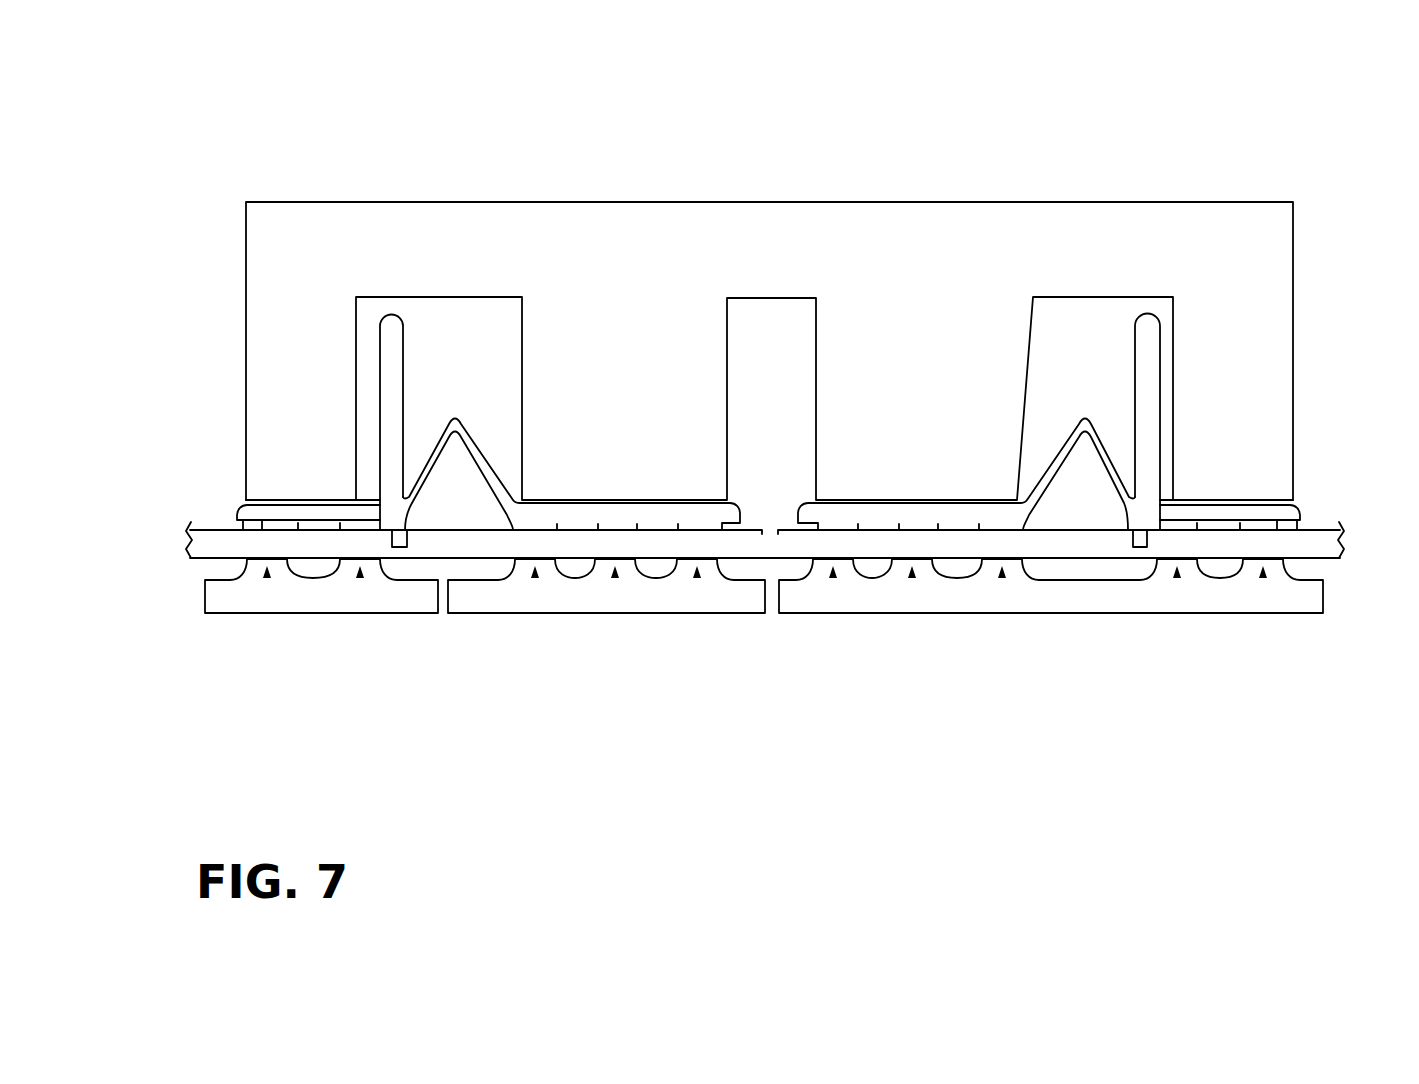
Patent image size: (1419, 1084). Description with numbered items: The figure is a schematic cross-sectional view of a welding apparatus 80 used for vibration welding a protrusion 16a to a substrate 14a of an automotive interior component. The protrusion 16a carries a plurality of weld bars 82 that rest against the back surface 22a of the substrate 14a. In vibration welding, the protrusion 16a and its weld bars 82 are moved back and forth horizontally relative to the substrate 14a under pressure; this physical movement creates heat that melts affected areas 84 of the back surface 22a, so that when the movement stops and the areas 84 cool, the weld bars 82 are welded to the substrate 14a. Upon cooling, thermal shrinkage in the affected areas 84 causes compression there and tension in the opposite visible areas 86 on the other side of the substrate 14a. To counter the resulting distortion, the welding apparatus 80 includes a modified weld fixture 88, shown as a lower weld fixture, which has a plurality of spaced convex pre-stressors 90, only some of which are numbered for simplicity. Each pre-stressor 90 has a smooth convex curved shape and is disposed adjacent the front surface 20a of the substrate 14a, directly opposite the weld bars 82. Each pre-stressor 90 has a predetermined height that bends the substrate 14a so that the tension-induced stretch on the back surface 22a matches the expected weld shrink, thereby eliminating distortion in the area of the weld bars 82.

The welding apparatus 80 is at (280, 148).
The protrusion 16a is at (388, 343).
The affected areas 84 is at (345, 530).
The back surface 22a is at (232, 530).
The weld bars 82 is at (273, 530).
The substrate 14a is at (1340, 537).
The front surface 20a is at (203, 562).
The modified weld fixture 88 is at (1326, 600).
The visible areas 86 is at (357, 560).
The pre-stressors 90 is at (267, 578).